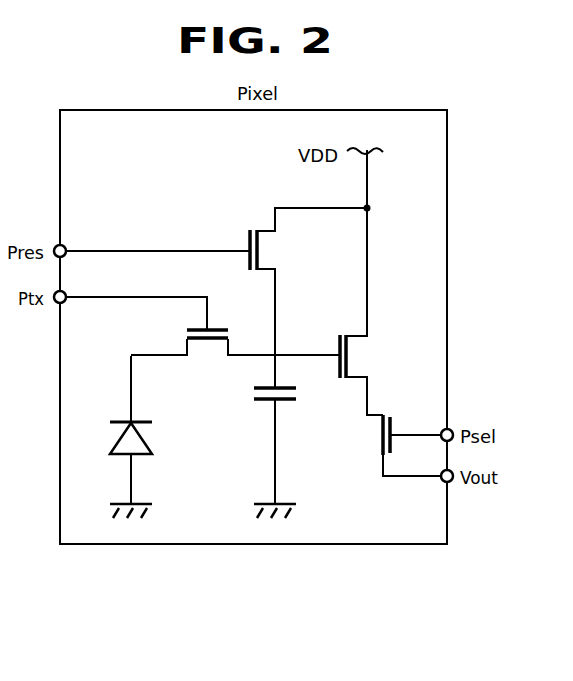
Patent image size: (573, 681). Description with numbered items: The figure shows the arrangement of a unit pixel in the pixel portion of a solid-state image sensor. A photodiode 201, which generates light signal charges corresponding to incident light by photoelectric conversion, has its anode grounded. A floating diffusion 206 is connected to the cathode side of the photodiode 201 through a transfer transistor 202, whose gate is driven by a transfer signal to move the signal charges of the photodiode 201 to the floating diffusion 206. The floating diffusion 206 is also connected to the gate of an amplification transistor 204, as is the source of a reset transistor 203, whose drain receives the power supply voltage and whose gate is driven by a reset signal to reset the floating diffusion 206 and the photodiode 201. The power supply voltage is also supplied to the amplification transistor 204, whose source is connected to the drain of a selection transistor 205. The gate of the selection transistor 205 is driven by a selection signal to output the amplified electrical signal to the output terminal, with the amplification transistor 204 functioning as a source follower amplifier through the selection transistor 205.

The photodiode 201 is at (124, 421).
The transfer transistor 202 is at (206, 344).
The reset transistor 203 is at (251, 225).
The amplification transistor 204 is at (360, 358).
The selection transistor 205 is at (366, 443).
The floating diffusion 206 is at (287, 402).